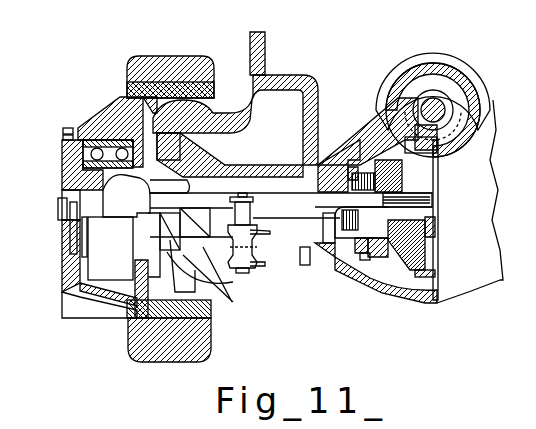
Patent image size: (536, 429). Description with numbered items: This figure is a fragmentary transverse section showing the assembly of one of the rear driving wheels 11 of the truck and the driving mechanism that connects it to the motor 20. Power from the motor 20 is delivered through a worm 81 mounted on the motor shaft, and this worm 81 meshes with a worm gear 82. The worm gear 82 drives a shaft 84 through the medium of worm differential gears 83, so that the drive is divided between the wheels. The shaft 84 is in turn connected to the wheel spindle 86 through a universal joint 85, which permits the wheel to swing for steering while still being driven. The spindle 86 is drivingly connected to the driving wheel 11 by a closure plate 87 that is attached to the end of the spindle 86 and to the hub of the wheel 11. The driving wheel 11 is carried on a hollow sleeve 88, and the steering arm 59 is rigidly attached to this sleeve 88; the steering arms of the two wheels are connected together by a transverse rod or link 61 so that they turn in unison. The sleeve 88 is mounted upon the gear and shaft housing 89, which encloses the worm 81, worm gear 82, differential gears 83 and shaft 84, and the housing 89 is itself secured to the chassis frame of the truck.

The driving wheel 11 is at (118, 120).
The motor 20 is at (410, 180).
The steering arm 59 is at (205, 280).
The transverse rod or link 61 is at (268, 235).
The worm 81 is at (440, 98).
The worm gear 82 is at (403, 162).
The worm differential gears 83 is at (435, 240).
The shaft 84 is at (428, 203).
The universal joint 85 is at (160, 228).
The wheel spindle 86 is at (122, 205).
The closure plate 87 is at (62, 158).
The hollow sleeve 88 is at (207, 152).
The gear and shaft housing 89 is at (250, 43).